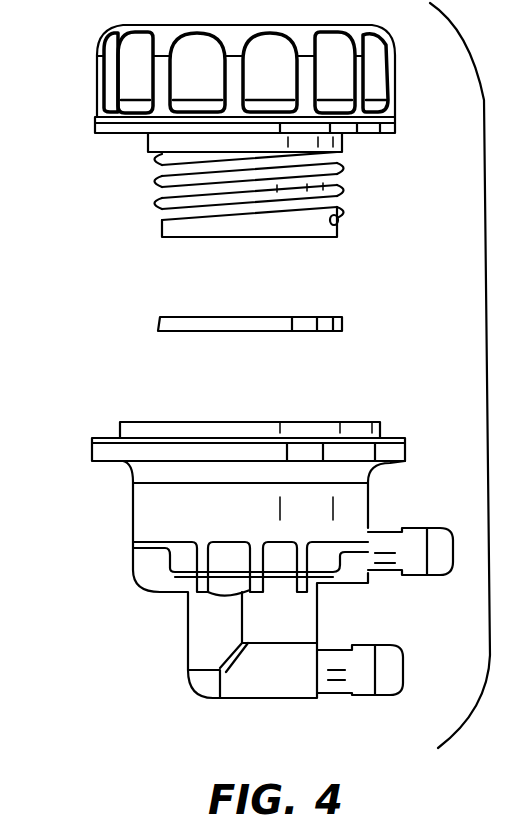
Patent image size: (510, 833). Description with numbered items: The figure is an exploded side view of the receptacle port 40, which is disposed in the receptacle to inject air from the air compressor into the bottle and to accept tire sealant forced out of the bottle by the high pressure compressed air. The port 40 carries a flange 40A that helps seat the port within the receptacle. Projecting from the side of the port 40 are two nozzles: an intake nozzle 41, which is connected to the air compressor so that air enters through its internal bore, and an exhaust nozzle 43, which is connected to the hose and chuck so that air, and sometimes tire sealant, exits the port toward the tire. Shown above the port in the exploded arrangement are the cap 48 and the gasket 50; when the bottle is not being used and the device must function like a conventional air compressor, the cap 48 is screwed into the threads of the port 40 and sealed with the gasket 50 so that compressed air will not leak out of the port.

The cap 48 is at (113, 77).
The gasket 50 is at (162, 321).
The port 40 is at (222, 560).
The flange 40A is at (110, 452).
The intake nozzle 41 is at (417, 562).
The exhaust nozzle 43 is at (363, 683).